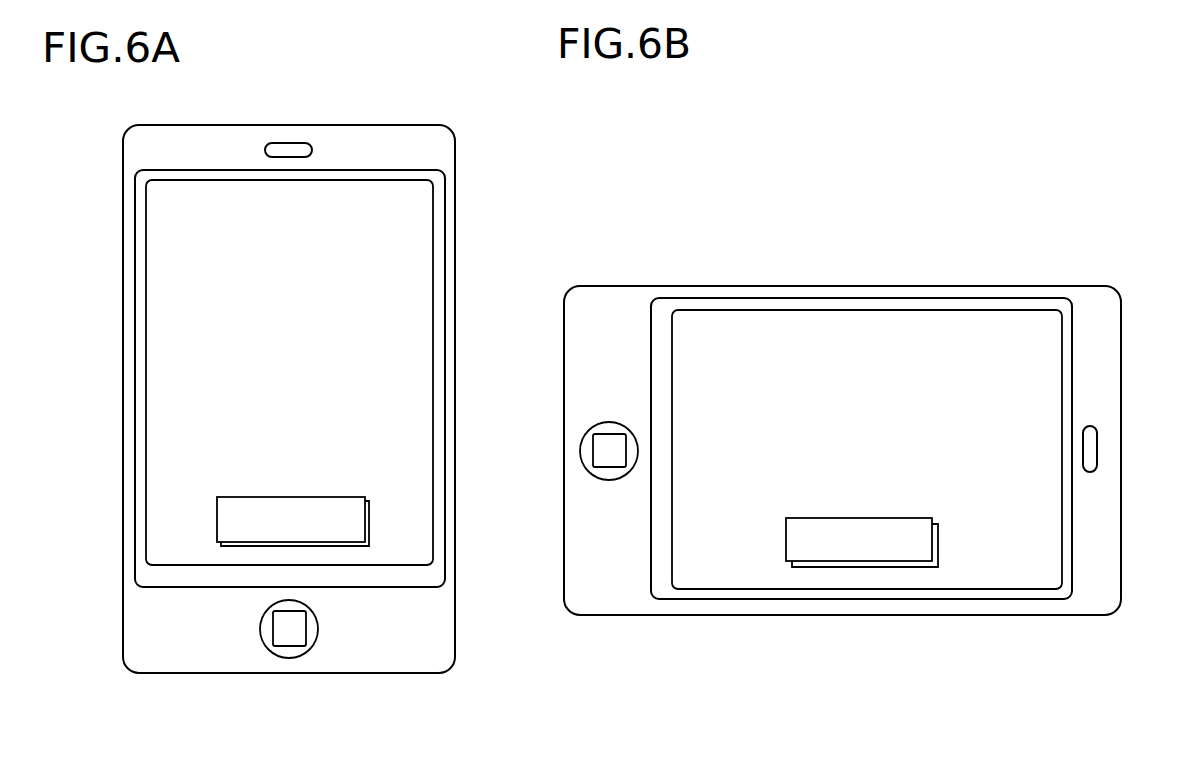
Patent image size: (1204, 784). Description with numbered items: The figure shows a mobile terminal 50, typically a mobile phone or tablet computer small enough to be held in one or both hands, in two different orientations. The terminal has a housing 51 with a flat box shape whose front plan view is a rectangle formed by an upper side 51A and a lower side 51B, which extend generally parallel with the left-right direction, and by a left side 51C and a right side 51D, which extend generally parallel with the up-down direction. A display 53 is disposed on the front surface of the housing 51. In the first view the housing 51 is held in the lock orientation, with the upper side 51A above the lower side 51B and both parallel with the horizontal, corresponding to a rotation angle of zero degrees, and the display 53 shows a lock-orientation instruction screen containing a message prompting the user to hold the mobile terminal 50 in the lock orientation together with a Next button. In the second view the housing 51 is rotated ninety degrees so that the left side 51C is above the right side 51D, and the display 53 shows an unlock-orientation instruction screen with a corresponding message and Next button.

In FIG. 6A, the mobile terminal 50 is at (476, 131).
In FIG. 6B, the mobile terminal 50 is at (1133, 271).
In FIG. 6A, the housing 51 is at (116, 212).
In FIG. 6B, the housing 51 is at (1040, 279).
In FIG. 6A, the upper side 51A is at (222, 125).
In FIG. 6B, the upper side 51A is at (1121, 383).
In FIG. 6A, the lower side 51B is at (342, 673).
In FIG. 6B, the lower side 51B is at (563, 508).
In FIG. 6A, the left side 51C is at (123, 310).
In FIG. 6B, the left side 51C is at (935, 286).
In FIG. 6A, the right side 51D is at (455, 305).
In FIG. 6B, the right side 51D is at (928, 613).
In FIG. 6A, the display 53 is at (183, 537).
In FIG. 6B, the display 53 is at (732, 580).